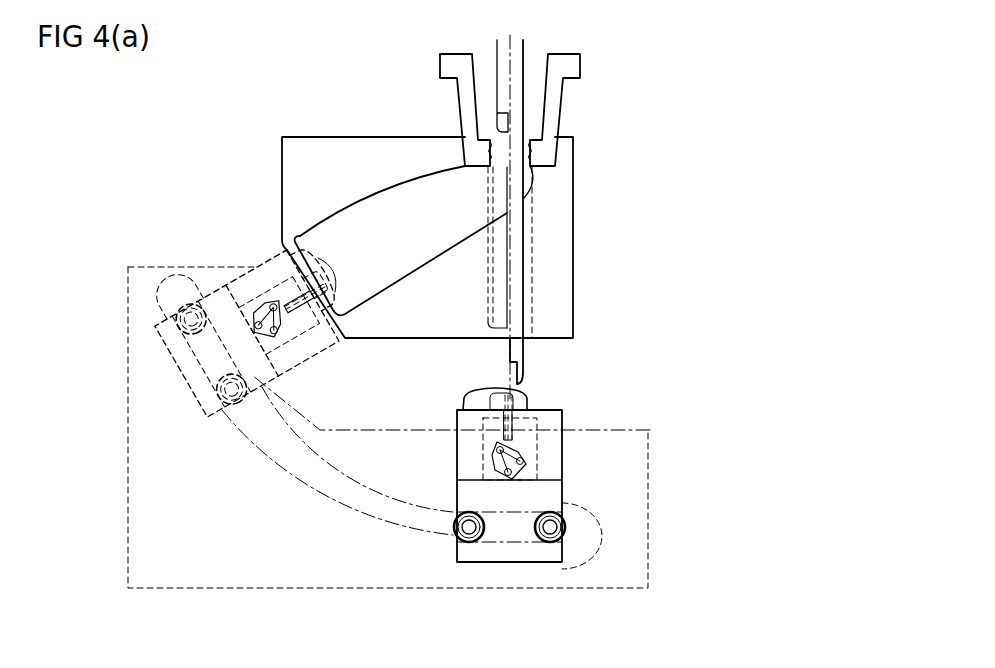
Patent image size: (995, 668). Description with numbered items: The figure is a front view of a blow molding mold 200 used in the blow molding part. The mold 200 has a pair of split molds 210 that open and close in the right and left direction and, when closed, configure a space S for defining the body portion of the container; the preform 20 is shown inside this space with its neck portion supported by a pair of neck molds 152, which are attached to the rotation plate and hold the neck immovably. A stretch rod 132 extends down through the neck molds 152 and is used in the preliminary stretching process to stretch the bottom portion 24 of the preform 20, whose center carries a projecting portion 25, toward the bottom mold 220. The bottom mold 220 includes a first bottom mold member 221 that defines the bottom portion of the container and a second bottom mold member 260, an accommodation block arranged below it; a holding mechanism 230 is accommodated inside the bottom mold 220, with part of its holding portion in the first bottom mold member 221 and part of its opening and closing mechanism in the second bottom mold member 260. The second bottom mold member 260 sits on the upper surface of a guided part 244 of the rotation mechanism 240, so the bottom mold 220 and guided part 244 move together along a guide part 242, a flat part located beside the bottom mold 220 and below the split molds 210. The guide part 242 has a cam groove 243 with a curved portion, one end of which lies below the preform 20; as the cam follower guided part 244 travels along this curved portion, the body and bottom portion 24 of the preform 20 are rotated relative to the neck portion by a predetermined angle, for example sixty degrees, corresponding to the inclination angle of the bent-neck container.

The blow molding mold 200 is at (138, 180).
The split molds 210 is at (560, 288).
The space S is at (375, 206).
The neck molds 152 is at (462, 112).
The stretch rod 132 is at (522, 90).
The preform 20 is at (524, 269).
The bottom portion 24 is at (489, 327).
The projecting portion 25 is at (499, 335).
The bottom mold 220 is at (425, 334).
The first bottom mold member 221 is at (527, 388).
The second bottom mold member 260 is at (562, 415).
The holding mechanism 230 is at (522, 441).
The rotation mechanism 240 is at (389, 444).
The cam groove 243 is at (319, 480).
The guide part 242 is at (325, 485).
The guided part 244 is at (248, 421).